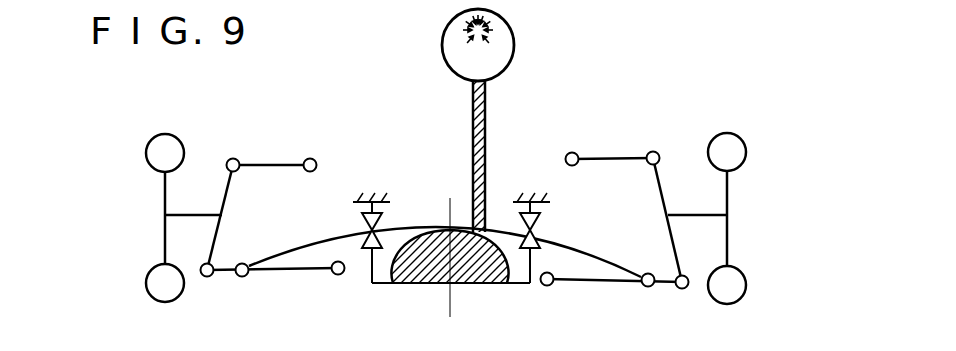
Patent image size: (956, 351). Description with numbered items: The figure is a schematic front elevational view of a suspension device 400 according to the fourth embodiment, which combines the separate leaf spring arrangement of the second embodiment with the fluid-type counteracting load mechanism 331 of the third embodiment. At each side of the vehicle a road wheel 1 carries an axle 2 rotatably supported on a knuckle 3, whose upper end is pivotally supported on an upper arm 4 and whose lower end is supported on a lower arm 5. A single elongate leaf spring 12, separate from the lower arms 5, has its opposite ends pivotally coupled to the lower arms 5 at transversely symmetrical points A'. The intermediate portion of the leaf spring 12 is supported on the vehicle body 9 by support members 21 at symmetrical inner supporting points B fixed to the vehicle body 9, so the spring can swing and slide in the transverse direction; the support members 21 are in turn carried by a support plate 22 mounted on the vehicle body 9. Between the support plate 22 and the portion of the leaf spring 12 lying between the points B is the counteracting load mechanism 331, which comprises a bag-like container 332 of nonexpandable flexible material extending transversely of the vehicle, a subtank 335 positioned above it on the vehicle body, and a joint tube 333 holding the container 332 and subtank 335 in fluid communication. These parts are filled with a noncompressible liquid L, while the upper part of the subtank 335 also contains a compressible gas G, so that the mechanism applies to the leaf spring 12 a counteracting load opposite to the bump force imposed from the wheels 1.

The road wheel 1 is at (159, 136).
The axle 2 is at (197, 214).
The knuckle 3 is at (236, 179).
The upper arm 4 is at (281, 164).
The lower arm 5 is at (290, 272).
The vehicle body 9 is at (364, 195).
The leaf spring 12 is at (393, 229).
The support member 21 is at (366, 250).
The support plate 22 is at (512, 284).
The counteracting load mechanism 331 is at (435, 258).
The container 332 is at (390, 284).
The joint tube 333 is at (476, 108).
The subtank 335 is at (492, 40).
The suspension device 400 is at (610, 62).
The compressible fluid G is at (474, 33).
The noncompressible fluid L is at (514, 57).
The inner supporting point B is at (367, 230).
The pivotal coupling point A' is at (451, 298).